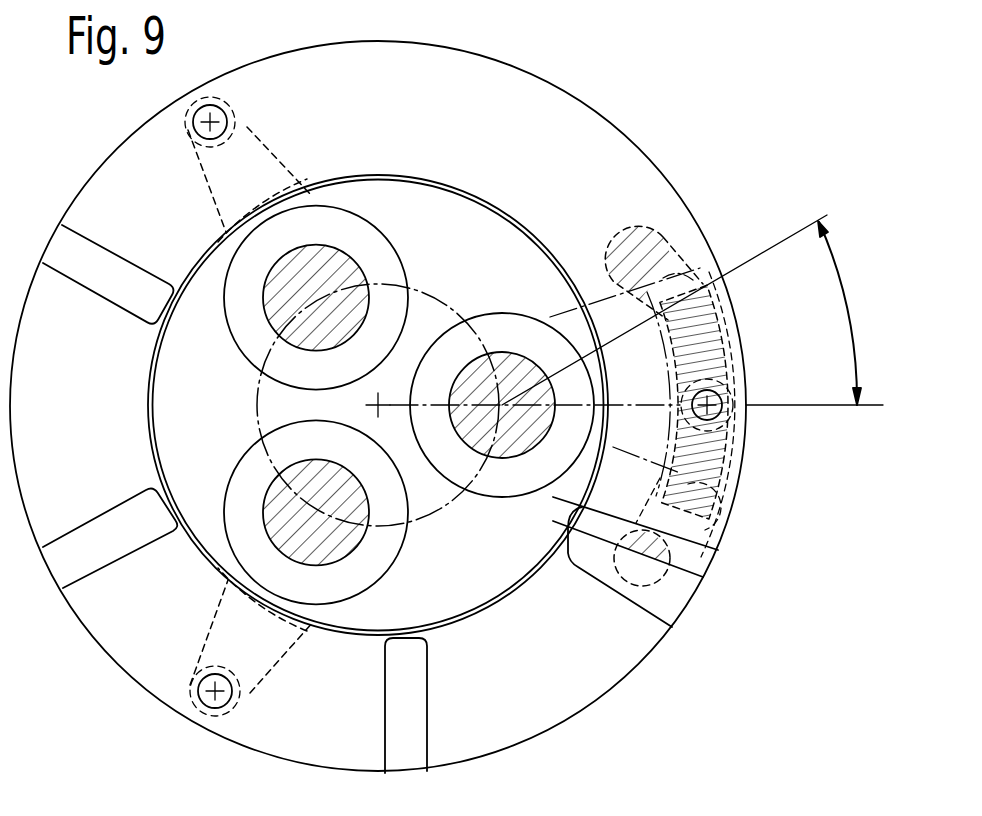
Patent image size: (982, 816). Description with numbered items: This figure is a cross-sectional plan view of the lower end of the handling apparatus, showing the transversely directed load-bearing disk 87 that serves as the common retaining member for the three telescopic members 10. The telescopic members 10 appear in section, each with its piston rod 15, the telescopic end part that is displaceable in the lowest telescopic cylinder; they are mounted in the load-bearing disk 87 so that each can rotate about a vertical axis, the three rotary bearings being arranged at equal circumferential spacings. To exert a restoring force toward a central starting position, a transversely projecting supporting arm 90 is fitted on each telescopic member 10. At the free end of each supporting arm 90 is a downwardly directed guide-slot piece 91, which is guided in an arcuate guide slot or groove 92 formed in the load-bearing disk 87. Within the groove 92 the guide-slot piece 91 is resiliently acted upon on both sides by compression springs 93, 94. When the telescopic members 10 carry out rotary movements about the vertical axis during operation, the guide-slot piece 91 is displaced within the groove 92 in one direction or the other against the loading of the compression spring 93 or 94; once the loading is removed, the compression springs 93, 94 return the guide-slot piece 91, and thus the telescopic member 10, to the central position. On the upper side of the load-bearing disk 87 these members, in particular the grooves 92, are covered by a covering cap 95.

The load-bearing disk 87 is at (627, 125).
The telescopic member 10 is at (218, 336).
The piston rod 15 is at (340, 267).
The supporting arm 90 is at (262, 162).
The guide-slot piece 91 is at (243, 114).
The groove 92 is at (630, 220).
The compression spring 93 is at (652, 238).
The compression spring 94 is at (690, 458).
The covering cap 95 is at (88, 233).